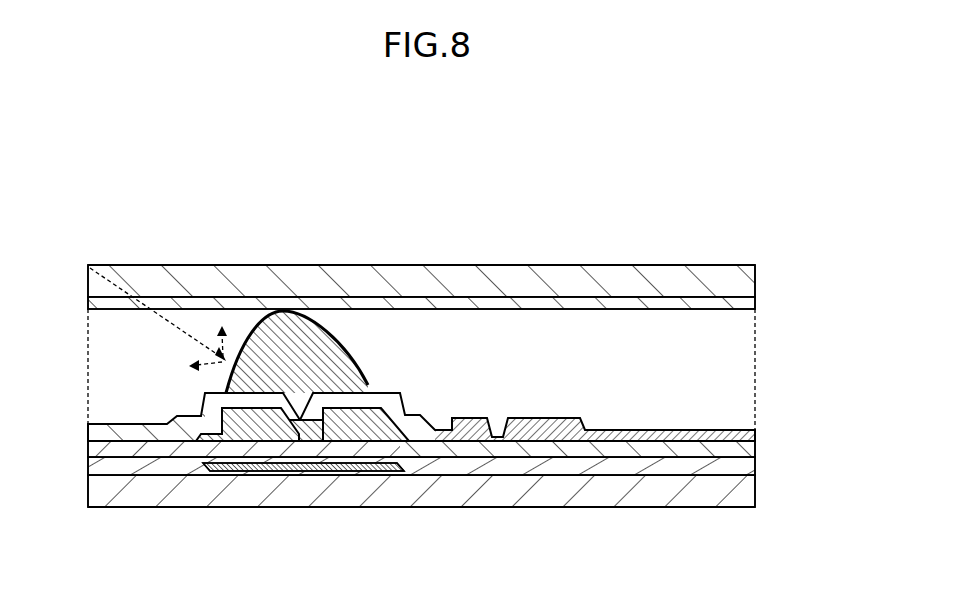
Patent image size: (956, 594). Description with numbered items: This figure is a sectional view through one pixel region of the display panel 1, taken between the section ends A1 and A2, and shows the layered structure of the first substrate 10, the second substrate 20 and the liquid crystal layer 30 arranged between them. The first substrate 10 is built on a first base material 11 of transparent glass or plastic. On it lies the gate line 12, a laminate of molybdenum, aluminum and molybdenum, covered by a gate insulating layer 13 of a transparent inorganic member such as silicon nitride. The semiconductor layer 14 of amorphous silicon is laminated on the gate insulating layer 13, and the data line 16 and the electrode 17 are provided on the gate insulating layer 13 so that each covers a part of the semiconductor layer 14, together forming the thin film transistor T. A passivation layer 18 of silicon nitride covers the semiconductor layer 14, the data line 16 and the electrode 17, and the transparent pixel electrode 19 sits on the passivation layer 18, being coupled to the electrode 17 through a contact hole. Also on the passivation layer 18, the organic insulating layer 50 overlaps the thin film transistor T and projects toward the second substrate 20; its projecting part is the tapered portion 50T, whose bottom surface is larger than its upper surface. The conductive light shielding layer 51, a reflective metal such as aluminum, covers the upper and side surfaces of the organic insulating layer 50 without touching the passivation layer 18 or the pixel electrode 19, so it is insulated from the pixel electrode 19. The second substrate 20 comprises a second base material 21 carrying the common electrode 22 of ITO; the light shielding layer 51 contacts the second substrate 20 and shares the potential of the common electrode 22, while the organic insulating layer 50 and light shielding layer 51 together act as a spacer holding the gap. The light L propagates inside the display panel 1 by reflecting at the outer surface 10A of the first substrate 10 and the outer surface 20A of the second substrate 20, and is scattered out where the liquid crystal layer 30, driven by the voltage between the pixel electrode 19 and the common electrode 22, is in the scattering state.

The display panel 1 is at (709, 157).
The first substrate 10 is at (425, 359).
The outer surface of the first substrate 10A is at (598, 507).
The first base material 11 is at (757, 490).
The gate line 12 is at (283, 469).
The gate insulating layer 13 is at (450, 508).
The semiconductor layer 14 is at (422, 391).
The data line 16 is at (172, 446).
The electrode 17 is at (450, 444).
The passivation layer 18 is at (757, 449).
The pixel electrode 19 is at (757, 432).
The second substrate 20 is at (425, 239).
The outer surface of the second substrate 20A is at (652, 265).
The second base material 21 is at (757, 285).
The common electrode 22 is at (757, 307).
The liquid crystal layer 30 is at (108, 371).
The organic insulating layer 50 is at (297, 275).
The light shielding layer 51 is at (300, 326).
The tapered portion 50T is at (374, 312).
The thin film transistor T is at (318, 359).
The light L is at (178, 265).
The section end A1 is at (72, 243).
The section end A2 is at (771, 243).